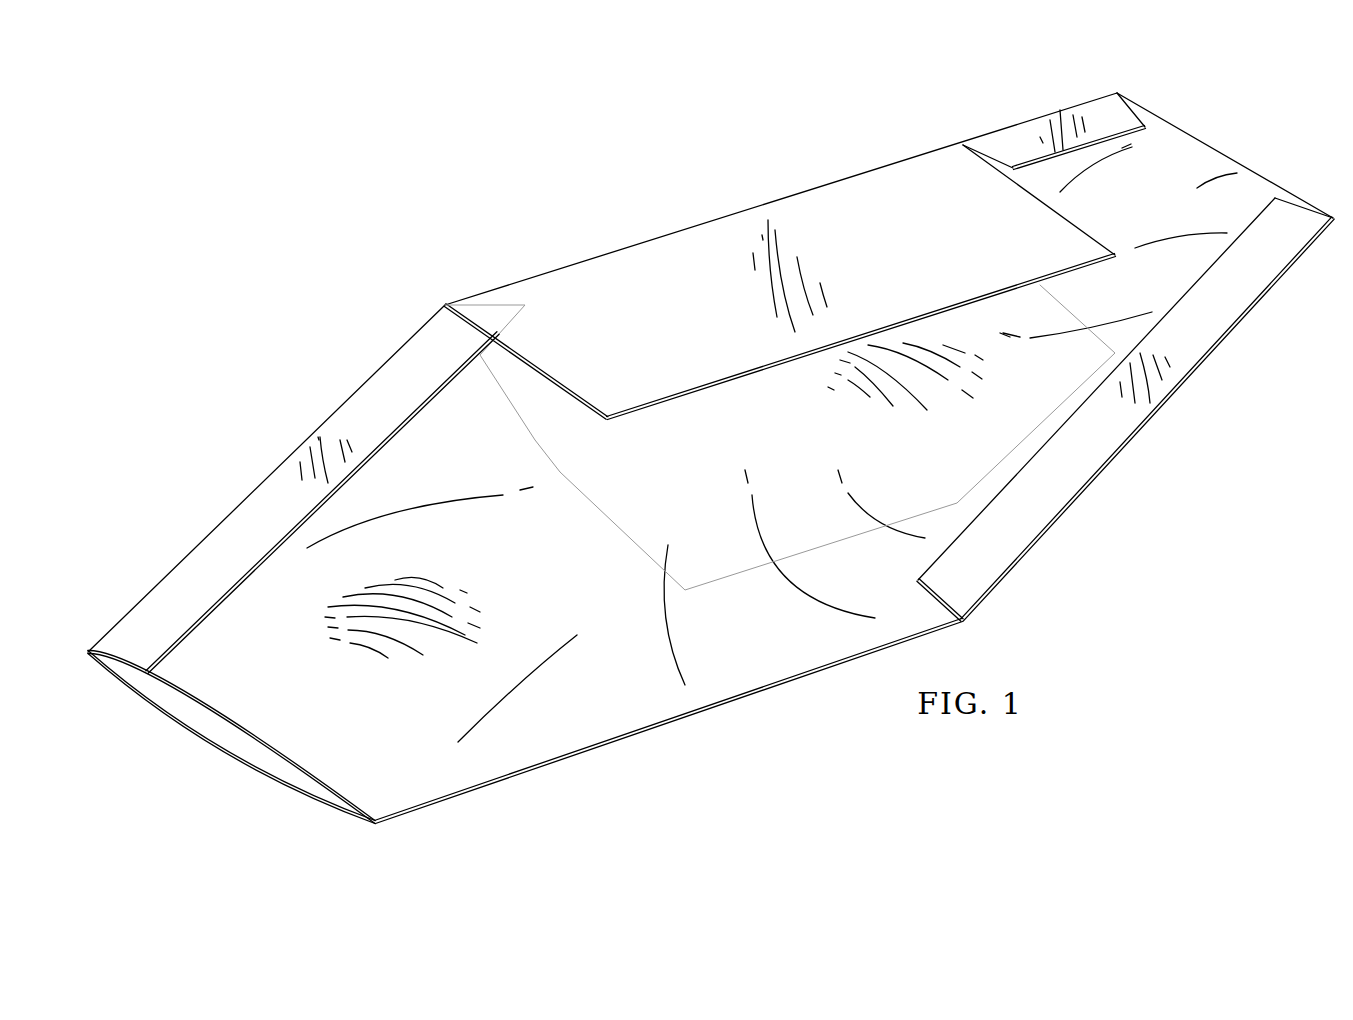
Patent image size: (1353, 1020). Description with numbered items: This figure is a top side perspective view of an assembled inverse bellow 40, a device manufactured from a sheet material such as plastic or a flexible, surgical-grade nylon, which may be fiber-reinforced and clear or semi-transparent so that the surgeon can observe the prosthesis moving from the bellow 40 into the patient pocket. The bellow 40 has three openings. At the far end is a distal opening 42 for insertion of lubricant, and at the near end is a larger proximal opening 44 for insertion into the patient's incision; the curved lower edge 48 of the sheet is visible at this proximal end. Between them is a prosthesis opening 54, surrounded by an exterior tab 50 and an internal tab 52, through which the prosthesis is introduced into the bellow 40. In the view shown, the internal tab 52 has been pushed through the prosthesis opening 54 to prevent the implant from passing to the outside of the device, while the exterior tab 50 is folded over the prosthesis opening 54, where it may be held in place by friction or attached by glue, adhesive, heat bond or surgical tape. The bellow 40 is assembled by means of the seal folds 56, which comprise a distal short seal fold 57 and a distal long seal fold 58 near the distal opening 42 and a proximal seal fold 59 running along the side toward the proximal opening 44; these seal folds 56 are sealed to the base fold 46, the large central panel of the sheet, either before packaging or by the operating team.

The inverse bellow 40 is at (397, 197).
The distal opening 42 is at (1251, 140).
The proximal opening 44 is at (215, 757).
The base fold 46 is at (530, 567).
The curved edge 48 is at (300, 792).
The exterior tab 50 is at (722, 225).
The internal tab 52 is at (735, 568).
The prosthesis opening 54 is at (428, 306).
The seal folds 56 is at (1020, 130).
The distal short seal fold 57 is at (1092, 108).
The distal long seal fold 58 is at (1087, 468).
The proximal seal fold 59 is at (270, 480).